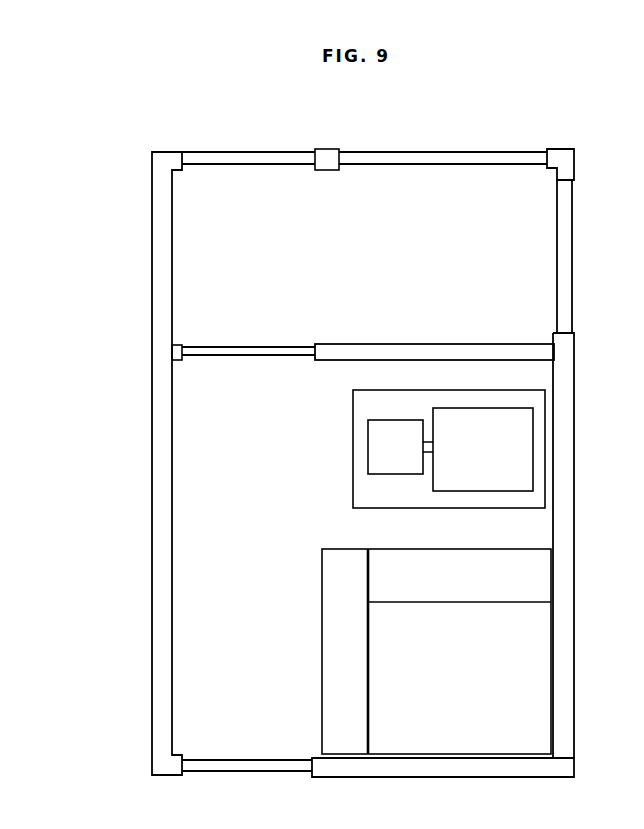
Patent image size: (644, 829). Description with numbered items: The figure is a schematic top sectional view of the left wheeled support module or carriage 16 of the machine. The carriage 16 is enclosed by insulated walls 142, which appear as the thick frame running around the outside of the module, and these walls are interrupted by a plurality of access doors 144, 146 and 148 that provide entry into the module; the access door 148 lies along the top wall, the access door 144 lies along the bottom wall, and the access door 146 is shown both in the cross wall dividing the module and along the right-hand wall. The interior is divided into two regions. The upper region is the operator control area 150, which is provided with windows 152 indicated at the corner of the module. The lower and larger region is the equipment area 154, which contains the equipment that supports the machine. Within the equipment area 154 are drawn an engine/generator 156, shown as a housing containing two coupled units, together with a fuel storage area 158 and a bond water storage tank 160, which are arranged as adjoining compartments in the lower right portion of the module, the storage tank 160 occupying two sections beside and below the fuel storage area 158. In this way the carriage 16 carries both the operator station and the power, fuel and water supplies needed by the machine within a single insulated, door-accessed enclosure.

The left support module or carriage 16 is at (347, 462).
The insulated walls 142 is at (152, 645).
The access door 144 is at (230, 776).
The access door 146 is at (228, 362).
The access door 148 is at (236, 152).
The operator control area 150 is at (374, 247).
The windows 152 is at (510, 180).
The equipment area 154 is at (223, 566).
The engine/generator 156 is at (353, 445).
The fuel storage area 158 is at (458, 588).
The bond water storage tank 160 is at (352, 666).